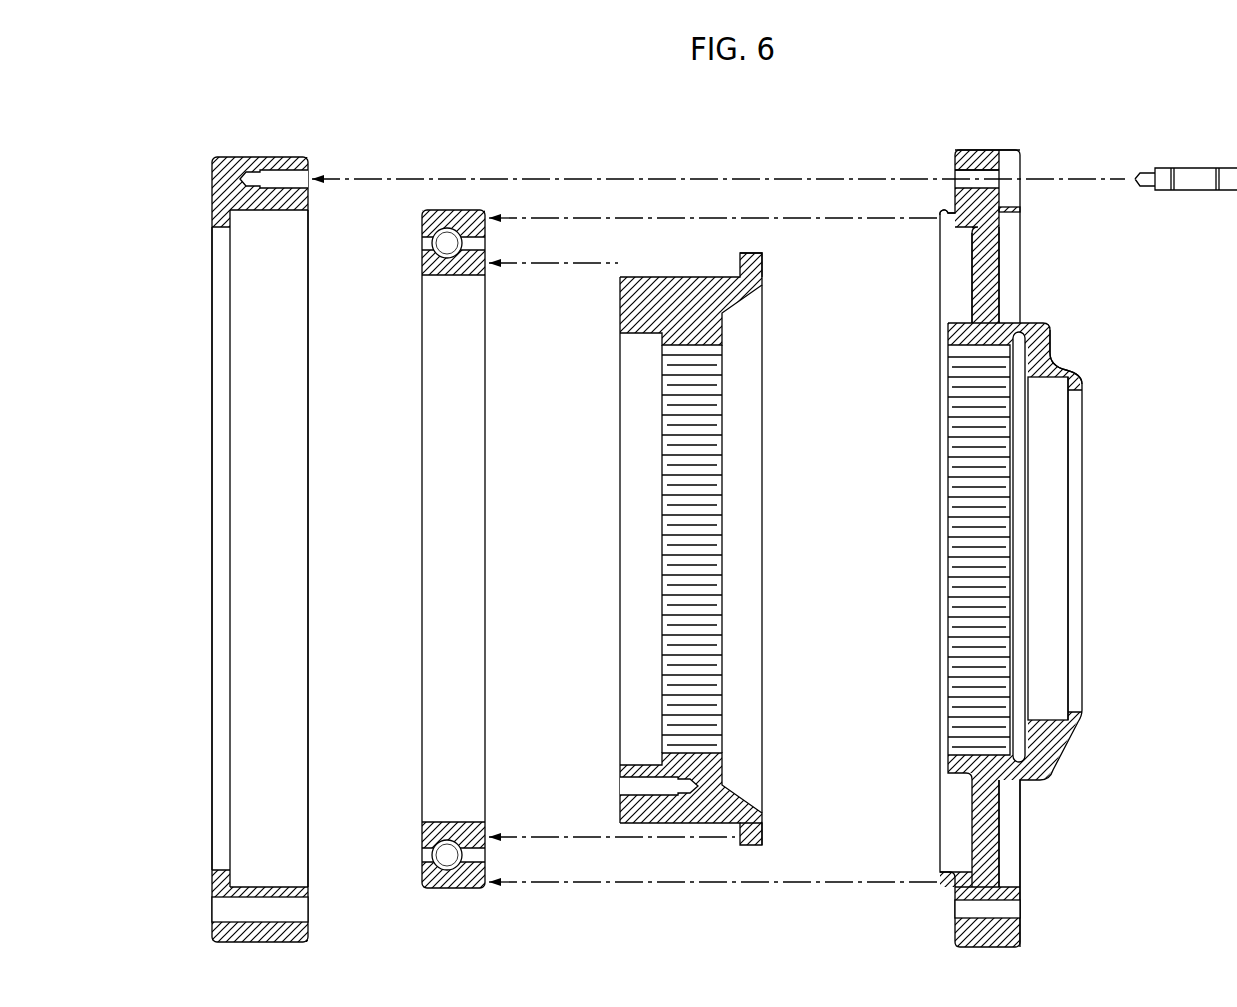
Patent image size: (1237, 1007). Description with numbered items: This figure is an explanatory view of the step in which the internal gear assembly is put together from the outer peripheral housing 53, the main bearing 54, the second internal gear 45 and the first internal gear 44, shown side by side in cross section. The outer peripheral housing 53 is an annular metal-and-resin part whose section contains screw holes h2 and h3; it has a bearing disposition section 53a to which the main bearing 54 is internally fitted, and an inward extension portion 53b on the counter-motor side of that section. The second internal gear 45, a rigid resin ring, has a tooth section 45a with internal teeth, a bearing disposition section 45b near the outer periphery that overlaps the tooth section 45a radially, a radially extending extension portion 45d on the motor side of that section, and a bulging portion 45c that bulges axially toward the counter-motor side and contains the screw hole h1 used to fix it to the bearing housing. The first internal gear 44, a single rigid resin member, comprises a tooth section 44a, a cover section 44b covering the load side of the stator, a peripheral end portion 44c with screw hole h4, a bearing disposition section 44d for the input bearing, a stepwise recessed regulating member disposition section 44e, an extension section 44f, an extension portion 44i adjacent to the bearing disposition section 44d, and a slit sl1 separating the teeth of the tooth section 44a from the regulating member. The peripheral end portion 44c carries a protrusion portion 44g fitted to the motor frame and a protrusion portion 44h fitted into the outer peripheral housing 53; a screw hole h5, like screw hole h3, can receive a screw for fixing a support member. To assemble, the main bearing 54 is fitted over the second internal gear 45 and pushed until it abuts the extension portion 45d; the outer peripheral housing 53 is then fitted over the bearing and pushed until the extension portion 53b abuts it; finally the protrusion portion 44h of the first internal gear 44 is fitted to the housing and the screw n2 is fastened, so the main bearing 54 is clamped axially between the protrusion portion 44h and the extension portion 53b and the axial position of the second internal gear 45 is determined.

The outer peripheral housing 53 is at (258, 140).
The screw hole h2 is at (284, 178).
The screw hole h3 is at (225, 912).
The bearing disposition section 53a is at (283, 260).
The extension portion 53b is at (220, 262).
The main bearing 54 is at (491, 212).
The second internal gear 45 is at (781, 323).
The tooth section 45a is at (695, 538).
The bearing disposition section 45b is at (708, 277).
The bulging portion 45c is at (619, 313).
The extension portion 45d is at (754, 253).
The screw hole h1 is at (633, 790).
The first internal gear 44 is at (1016, 143).
The tooth section 44a is at (963, 430).
The cover section 44b is at (1090, 710).
The peripheral end portion 44c is at (958, 157).
The bearing disposition section 44d is at (1050, 442).
The regulating member disposition section 44e is at (1026, 360).
The extension section 44f is at (965, 280).
The protrusion portion 44g is at (1011, 209).
The protrusion portion 44h is at (941, 214).
The extension portion 44i is at (1079, 393).
The slit sl1 is at (1018, 340).
The screw hole h4 is at (998, 177).
The screw hole h5 is at (962, 910).
The screw n2 is at (1193, 170).